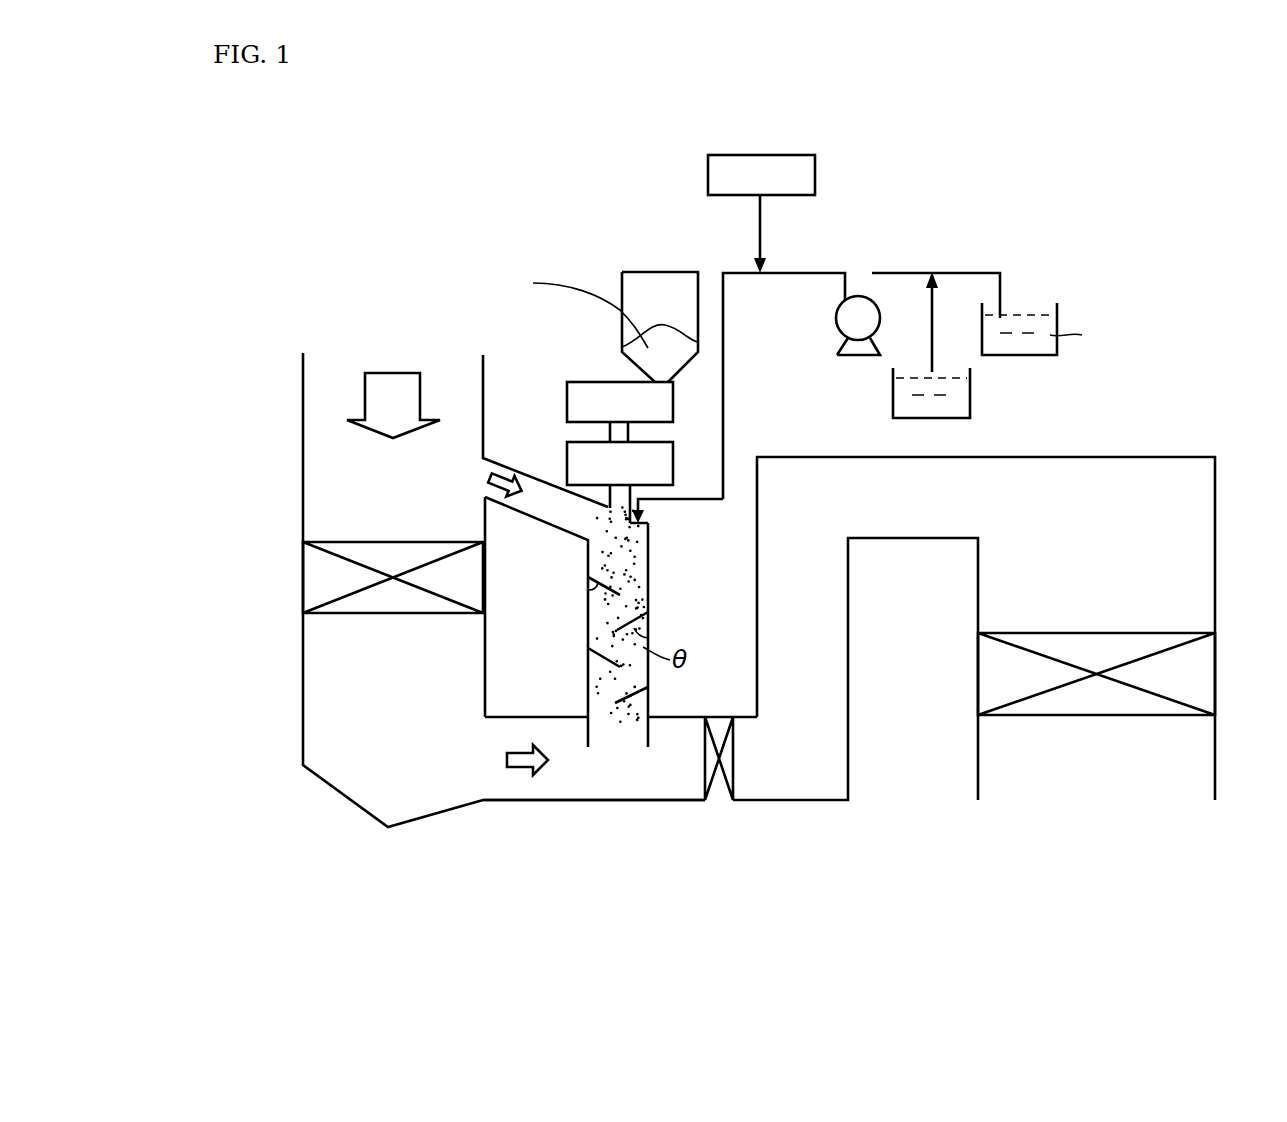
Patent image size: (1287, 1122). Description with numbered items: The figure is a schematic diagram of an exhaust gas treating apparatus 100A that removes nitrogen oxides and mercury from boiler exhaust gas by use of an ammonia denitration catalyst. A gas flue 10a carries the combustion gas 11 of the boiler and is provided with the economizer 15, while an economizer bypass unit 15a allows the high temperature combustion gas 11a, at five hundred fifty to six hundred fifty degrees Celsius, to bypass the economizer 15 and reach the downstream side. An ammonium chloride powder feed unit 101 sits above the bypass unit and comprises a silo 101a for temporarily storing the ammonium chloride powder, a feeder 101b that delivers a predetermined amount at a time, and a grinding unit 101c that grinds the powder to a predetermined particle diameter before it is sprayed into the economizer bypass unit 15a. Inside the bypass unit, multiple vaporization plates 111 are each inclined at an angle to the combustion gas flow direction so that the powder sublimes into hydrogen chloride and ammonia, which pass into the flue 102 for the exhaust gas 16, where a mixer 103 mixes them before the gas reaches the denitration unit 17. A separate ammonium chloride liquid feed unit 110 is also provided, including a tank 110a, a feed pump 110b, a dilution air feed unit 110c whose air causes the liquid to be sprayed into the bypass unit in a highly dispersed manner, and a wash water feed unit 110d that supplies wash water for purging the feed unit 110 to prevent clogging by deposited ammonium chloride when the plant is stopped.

The exhaust gas treating apparatus 100A is at (1098, 252).
The gas flue 10a is at (483, 372).
The combustion gas 11 is at (365, 393).
The high temperature combustion gas 11a is at (492, 481).
The economizer 15 is at (303, 563).
The economizer bypass unit 15a is at (592, 640).
The exhaust gas 16 is at (520, 768).
The denitration unit 17 is at (978, 708).
The ammonium chloride powder feed unit 101 is at (578, 349).
The silo 101a is at (660, 272).
The feeder 101b is at (567, 403).
The grinding unit 101c is at (567, 450).
The exhaust gas flue 102 is at (605, 805).
The mixer 103 is at (718, 795).
The ammonium chloride liquid feed unit 110 is at (894, 339).
The tank 110a is at (1040, 356).
The feed pump 110b is at (843, 323).
The dilution air feed unit 110c is at (815, 168).
The wash water feed unit 110d is at (970, 397).
The vaporization plate 111 is at (588, 581).